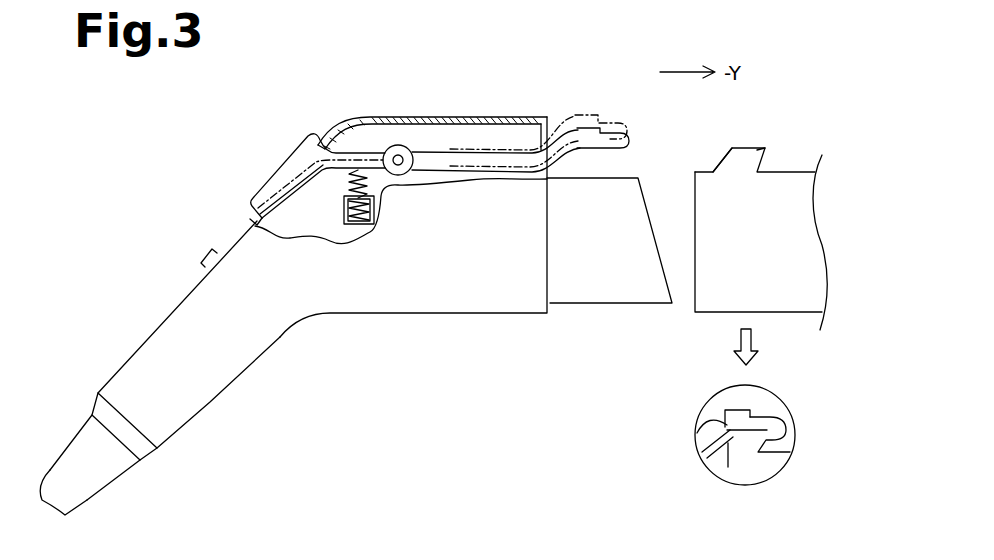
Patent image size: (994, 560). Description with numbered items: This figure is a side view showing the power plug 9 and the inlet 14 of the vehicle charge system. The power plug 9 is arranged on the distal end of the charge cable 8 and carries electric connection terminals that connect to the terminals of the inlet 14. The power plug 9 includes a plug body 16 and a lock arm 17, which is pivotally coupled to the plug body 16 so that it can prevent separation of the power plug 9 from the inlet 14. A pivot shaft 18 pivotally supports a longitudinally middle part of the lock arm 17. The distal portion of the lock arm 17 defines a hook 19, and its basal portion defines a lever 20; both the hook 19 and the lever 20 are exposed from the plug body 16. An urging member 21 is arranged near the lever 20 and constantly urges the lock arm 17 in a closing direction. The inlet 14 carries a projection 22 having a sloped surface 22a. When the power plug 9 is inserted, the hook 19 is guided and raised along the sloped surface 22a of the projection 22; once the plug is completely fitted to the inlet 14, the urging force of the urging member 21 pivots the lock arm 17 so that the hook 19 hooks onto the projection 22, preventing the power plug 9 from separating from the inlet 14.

The charge cable 8 is at (43, 478).
The power plug 9 is at (473, 315).
The inlet 14 is at (710, 308).
The plug body 16 is at (377, 305).
The lock arm 17 is at (505, 150).
The pivot shaft 18 is at (399, 157).
The hook 19 is at (633, 148).
The lever 20 is at (276, 169).
The urging member 21 is at (383, 192).
The projection 22 is at (759, 149).
The sloped surface 22a is at (724, 148).